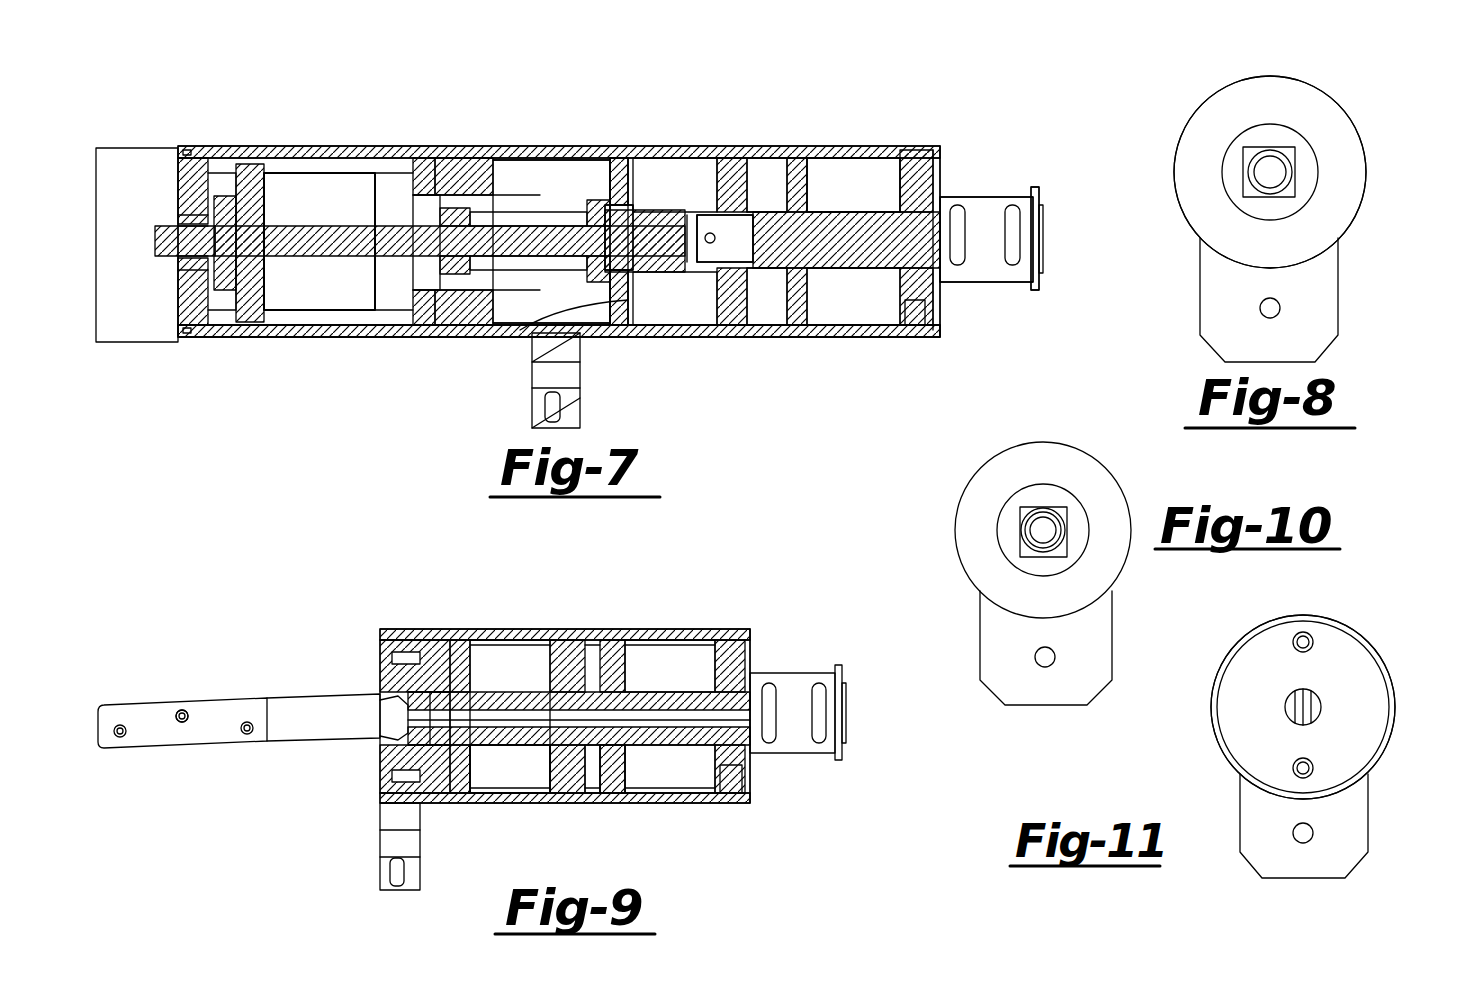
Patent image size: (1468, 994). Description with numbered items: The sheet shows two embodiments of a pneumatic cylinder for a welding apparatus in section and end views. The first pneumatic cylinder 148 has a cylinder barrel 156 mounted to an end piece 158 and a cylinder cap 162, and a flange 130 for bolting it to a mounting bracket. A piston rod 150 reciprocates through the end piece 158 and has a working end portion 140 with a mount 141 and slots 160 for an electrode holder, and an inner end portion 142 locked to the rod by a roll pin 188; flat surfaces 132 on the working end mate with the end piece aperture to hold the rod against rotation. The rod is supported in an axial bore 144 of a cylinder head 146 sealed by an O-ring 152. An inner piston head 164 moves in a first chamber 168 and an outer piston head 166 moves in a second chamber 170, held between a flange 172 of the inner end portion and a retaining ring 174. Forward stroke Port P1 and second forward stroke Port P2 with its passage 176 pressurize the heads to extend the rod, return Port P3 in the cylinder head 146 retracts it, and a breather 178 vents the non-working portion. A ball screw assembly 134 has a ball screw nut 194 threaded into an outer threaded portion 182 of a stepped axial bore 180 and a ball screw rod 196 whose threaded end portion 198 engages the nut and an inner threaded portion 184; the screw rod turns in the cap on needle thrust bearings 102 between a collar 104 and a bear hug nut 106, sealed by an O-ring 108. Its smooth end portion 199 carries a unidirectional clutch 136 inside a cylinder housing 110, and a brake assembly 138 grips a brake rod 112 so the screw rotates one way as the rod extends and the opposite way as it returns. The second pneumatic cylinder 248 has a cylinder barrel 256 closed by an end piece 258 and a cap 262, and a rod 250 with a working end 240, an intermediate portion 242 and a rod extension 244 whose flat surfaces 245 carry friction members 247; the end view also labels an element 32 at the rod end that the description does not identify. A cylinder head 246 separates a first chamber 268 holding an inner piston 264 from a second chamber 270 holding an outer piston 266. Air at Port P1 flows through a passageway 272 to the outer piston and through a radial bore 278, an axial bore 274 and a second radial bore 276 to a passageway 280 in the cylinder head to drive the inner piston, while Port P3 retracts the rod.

In FIG. 10, the actuator shaft 32 is at (1070, 520).
In FIG. 7, the needle thrust bearing package 102 is at (352, 338).
In FIG. 7, the collar 104 is at (445, 160).
In FIG. 7, the bear hug nut 106 is at (362, 158).
In FIG. 7, the O-ring 108 is at (385, 330).
In FIG. 7, the cylinder housing 110 is at (235, 340).
In FIG. 7, the brake rod 112 is at (160, 256).
In FIG. 7, the flange 130 is at (582, 420).
In FIG. 8, the flange 130 is at (1340, 300).
In FIG. 10, the flange 130 is at (1090, 655).
In FIG. 11, the flange 130 is at (1320, 860).
In FIG. 9, the flange 130 is at (380, 880).
In FIG. 8, the flat surfaces 132 is at (1243, 170).
In FIG. 7, the ball screw assembly 134 is at (540, 185).
In FIG. 7, the unidirectional clutch assembly 136 is at (285, 158).
In FIG. 7, the brake assembly 138 is at (150, 148).
In FIG. 7, the working end portion 140 is at (880, 338).
In FIG. 7, the mount 141 is at (990, 258).
In FIG. 7, the inner end portion 142 is at (640, 300).
In FIG. 7, the axial bore 144 is at (820, 225).
In FIG. 7, the cylinder head 146 is at (752, 158).
In FIG. 7, the pneumatic cylinder 148 is at (612, 140).
In FIG. 8, the pneumatic cylinder 148 is at (1268, 72).
In FIG. 7, the piston rod 150 is at (822, 170).
In FIG. 7, the O-ring 152 is at (700, 335).
In FIG. 7, the cylinder barrel 156 is at (830, 158).
In FIG. 7, the end piece 158 is at (925, 150).
In FIG. 8, the end piece 158 is at (1325, 110).
In FIG. 7, the slots 160 is at (1015, 205).
In FIG. 7, the cylinder cap 162 is at (465, 158).
In FIG. 7, the inner piston head 164 is at (795, 158).
In FIG. 7, the outer piston head 166 is at (618, 158).
In FIG. 7, the first chamber 168 is at (735, 330).
In FIG. 7, the second chamber 170 is at (830, 330).
In FIG. 7, the flange 172 is at (530, 335).
In FIG. 7, the retaining ring 174 is at (595, 345).
In FIG. 7, the passage 176 is at (430, 330).
In FIG. 7, the breather 178 is at (920, 337).
In FIG. 9, the breather 178 is at (750, 793).
In FIG. 7, the stepped axial bore 180 is at (625, 158).
In FIG. 7, the outer threaded portion 182 is at (500, 330).
In FIG. 7, the inner threaded portion 184 is at (600, 330).
In FIG. 7, the roll pin 188 is at (690, 158).
In FIG. 7, the ball screw nut 194 is at (495, 158).
In FIG. 7, the ball screw rod 196 is at (480, 158).
In FIG. 7, the threaded end portion 198 is at (650, 215).
In FIG. 7, the smooth end portion 199 is at (310, 240).
In FIG. 7, the forward stroke port P1 is at (745, 160).
In FIG. 9, the forward stroke port P1 is at (430, 803).
In FIG. 7, the second forward stroke port P2 is at (440, 340).
In FIG. 7, the return port P3 is at (760, 330).
In FIG. 9, the return port P3 is at (592, 793).
In FIG. 9, the working end 240 is at (700, 640).
In FIG. 9, the intermediate portion 242 is at (520, 793).
In FIG. 11, the rod extension 244 is at (1285, 730).
In FIG. 9, the rod extension 244 is at (275, 742).
In FIG. 11, the flat surfaces 245 is at (1303, 690).
In FIG. 9, the cylinder head 246 is at (570, 640).
In FIG. 11, the friction members 247 is at (1285, 702).
In FIG. 9, the friction members 247 is at (155, 705).
In FIG. 9, the pneumatic cylinder 248 is at (615, 815).
In FIG. 10, the rod 250 is at (1040, 530).
In FIG. 9, the rod 250 is at (290, 697).
In FIG. 9, the cylinder barrel 256 is at (500, 640).
In FIG. 10, the end piece 258 is at (980, 515).
In FIG. 9, the end piece 258 is at (745, 640).
In FIG. 11, the cap 262 is at (1262, 660).
In FIG. 9, the cap 262 is at (380, 780).
In FIG. 9, the inner piston 264 is at (620, 640).
In FIG. 9, the outer piston 266 is at (455, 640).
In FIG. 9, the first chamber 268 is at (700, 793).
In FIG. 9, the second chamber 270 is at (530, 793).
In FIG. 9, the passageway 272 is at (395, 745).
In FIG. 9, the axial bore 274 is at (505, 692).
In FIG. 9, the second radial bore 276 is at (620, 745).
In FIG. 9, the radial bore 278 is at (380, 718).
In FIG. 9, the passageway 280 is at (640, 793).